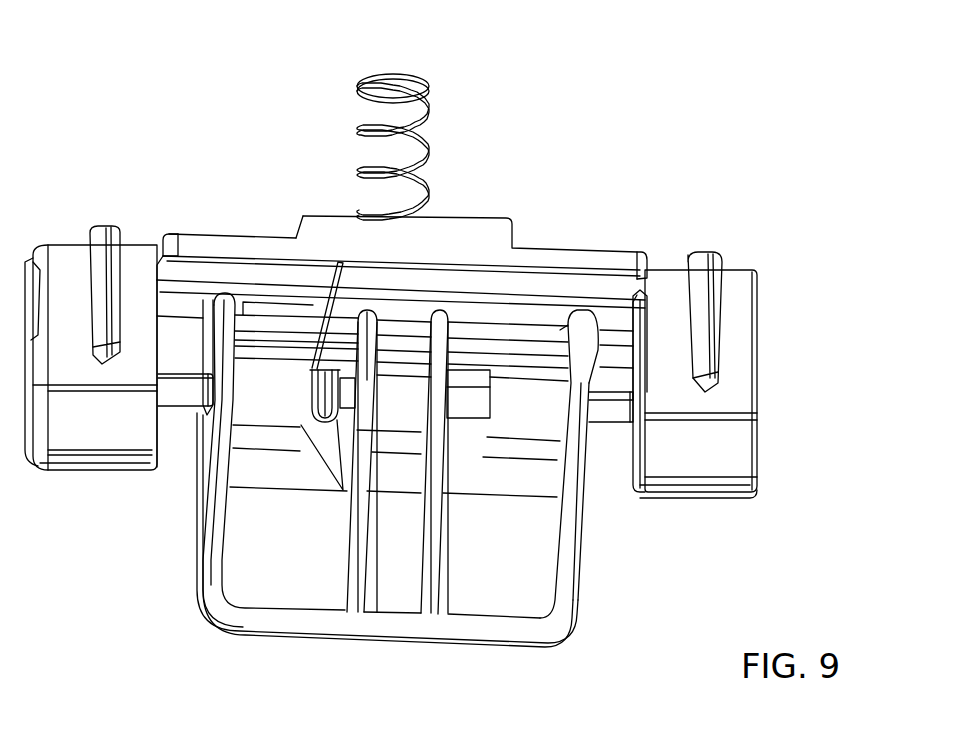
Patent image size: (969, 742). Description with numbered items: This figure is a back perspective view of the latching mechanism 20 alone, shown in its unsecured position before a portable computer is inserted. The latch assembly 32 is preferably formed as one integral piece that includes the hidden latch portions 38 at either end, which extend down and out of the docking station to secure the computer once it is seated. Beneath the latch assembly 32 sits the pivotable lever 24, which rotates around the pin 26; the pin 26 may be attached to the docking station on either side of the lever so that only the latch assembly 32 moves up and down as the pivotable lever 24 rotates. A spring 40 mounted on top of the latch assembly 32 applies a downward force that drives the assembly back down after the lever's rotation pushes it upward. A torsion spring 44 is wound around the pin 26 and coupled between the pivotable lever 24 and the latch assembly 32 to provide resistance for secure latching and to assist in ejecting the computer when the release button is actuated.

The latching mechanism 20 is at (623, 126).
The pivotable lever 24 is at (374, 639).
The pin 26 is at (614, 424).
The latch assembly 32 is at (186, 230).
The hidden latch portion 38 is at (108, 467).
The spring 40 is at (414, 76).
The torsion spring 44 is at (321, 430).